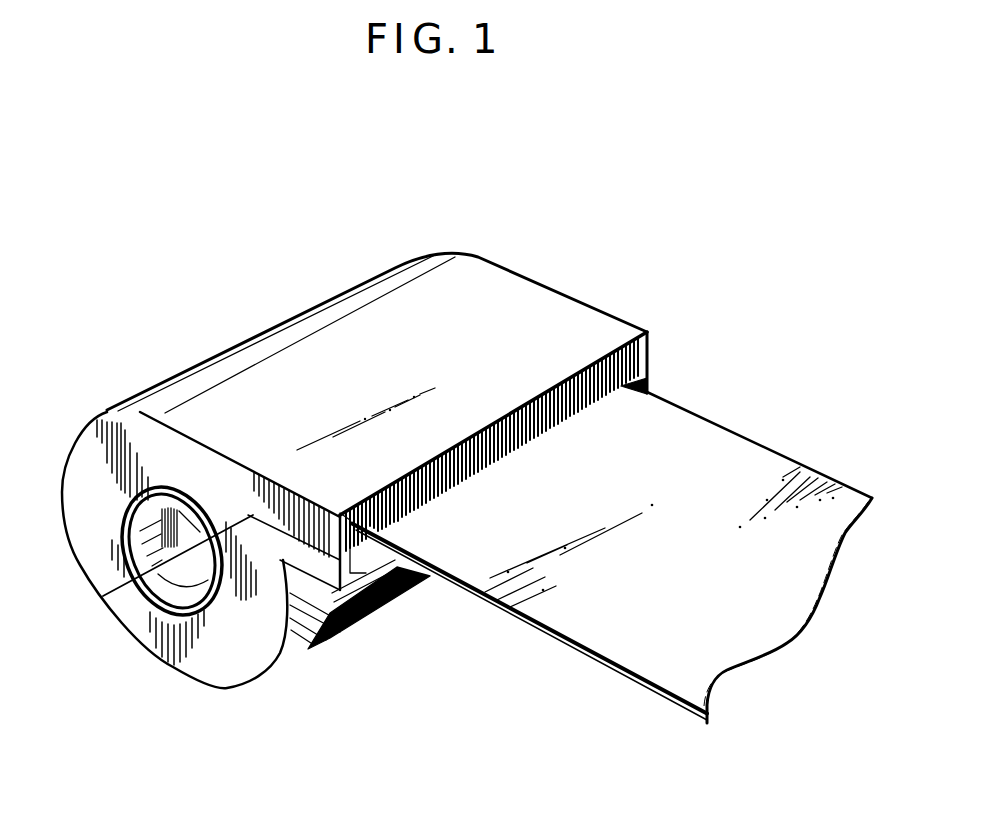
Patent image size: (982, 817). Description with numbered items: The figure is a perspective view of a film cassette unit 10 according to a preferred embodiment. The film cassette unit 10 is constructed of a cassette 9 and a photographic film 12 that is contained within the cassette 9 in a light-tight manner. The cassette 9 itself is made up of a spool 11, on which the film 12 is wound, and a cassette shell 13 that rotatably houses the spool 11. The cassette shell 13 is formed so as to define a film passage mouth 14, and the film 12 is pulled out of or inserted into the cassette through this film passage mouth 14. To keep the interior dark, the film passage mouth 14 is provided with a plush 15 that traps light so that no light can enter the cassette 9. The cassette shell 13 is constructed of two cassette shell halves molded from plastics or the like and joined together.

The cassette 9 is at (47, 643).
The film cassette unit 10 is at (419, 206).
The spool 11 is at (193, 610).
The photographic film 12 is at (577, 621).
The cassette shell 13 is at (102, 562).
The film passage mouth 14 is at (502, 422).
The plush 15 is at (447, 493).